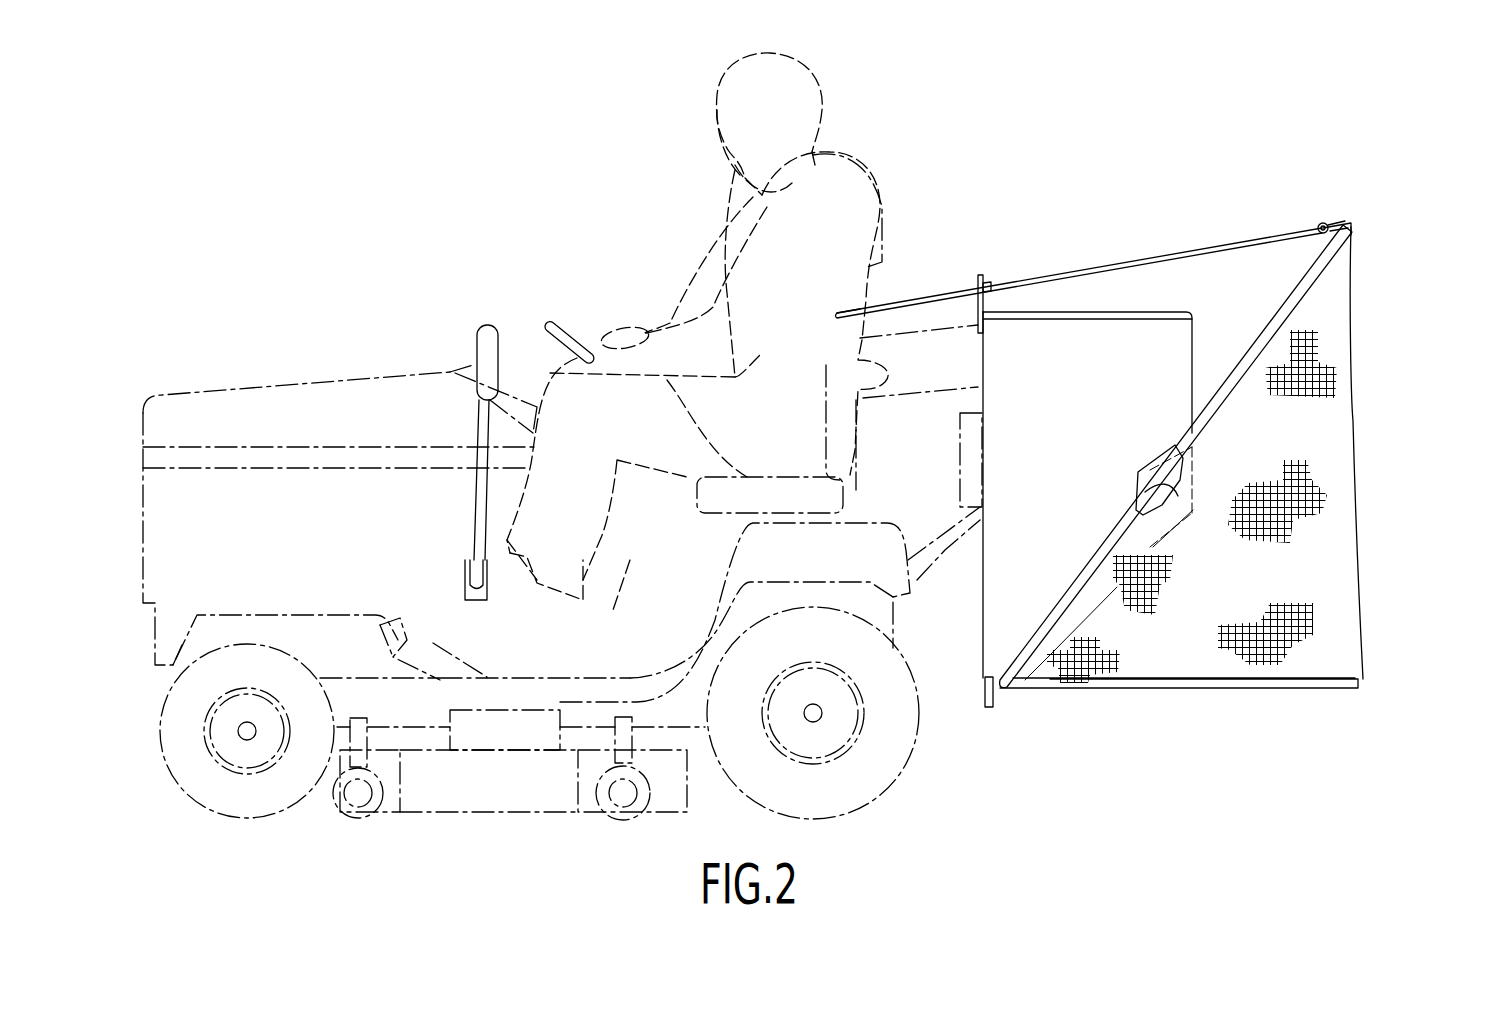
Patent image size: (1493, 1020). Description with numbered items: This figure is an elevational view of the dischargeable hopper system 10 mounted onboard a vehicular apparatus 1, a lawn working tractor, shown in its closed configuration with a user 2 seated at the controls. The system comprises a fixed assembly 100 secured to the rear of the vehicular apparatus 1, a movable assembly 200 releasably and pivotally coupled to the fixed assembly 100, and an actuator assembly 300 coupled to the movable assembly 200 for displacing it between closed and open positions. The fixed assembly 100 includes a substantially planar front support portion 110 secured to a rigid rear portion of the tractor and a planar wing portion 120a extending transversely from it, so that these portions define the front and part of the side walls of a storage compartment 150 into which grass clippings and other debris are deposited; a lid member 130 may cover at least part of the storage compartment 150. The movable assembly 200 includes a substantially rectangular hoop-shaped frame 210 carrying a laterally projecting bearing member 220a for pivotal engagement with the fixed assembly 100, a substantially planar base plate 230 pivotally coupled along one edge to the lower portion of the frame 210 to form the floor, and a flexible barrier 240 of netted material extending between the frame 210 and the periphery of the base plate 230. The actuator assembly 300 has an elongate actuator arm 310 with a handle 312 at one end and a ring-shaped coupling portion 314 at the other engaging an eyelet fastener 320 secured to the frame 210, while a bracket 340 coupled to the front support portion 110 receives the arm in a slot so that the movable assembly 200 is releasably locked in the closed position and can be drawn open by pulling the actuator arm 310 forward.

The vehicular apparatus 1 is at (328, 400).
The user 2 is at (823, 212).
The dischargeable hopper system 10 is at (1234, 141).
The fixed assembly 100 is at (1145, 481).
The front support portion 110 is at (985, 710).
The wing portion 120a is at (1090, 448).
The lid member 130 is at (1128, 313).
The storage compartment 150 is at (1218, 338).
The movable assembly 200 is at (1248, 445).
The frame 210 is at (1349, 227).
The bearing member 220a is at (1150, 493).
The base plate 230 is at (1325, 690).
The flexible barrier 240 is at (1338, 564).
The actuator assembly 300 is at (1110, 246).
The actuator arm 310 is at (1197, 250).
The handle 312 is at (853, 307).
The coupling portion 314 is at (1317, 228).
The eyelet fastener 320 is at (1332, 216).
The bracket 340 is at (983, 297).